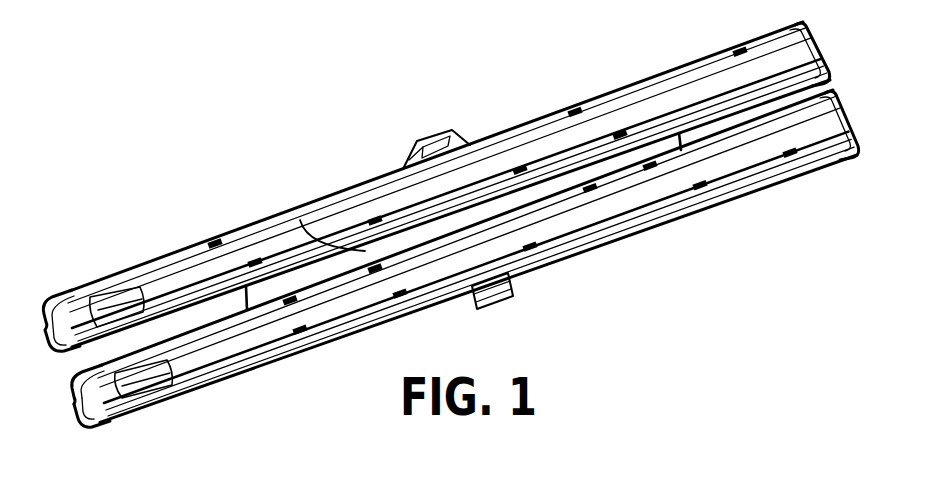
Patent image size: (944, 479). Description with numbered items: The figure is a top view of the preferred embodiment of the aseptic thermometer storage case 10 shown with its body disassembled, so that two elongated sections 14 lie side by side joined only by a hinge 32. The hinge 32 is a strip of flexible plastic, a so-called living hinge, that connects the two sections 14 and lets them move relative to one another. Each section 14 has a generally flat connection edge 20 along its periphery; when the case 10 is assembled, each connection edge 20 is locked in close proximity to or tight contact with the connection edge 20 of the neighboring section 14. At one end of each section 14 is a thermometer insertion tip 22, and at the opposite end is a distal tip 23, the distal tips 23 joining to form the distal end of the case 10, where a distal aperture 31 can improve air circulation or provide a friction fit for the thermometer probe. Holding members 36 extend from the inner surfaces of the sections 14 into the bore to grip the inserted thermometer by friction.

The aseptic thermometer storage case 10 is at (375, 92).
The elongated section 14 is at (586, 72).
The connection edge 20 is at (683, 57).
The thermometer insertion tip 22 is at (810, 50).
The distal tip 23 is at (66, 392).
The distal aperture 31 is at (74, 416).
The hinge 32 is at (300, 220).
The holding member 36 is at (122, 293).